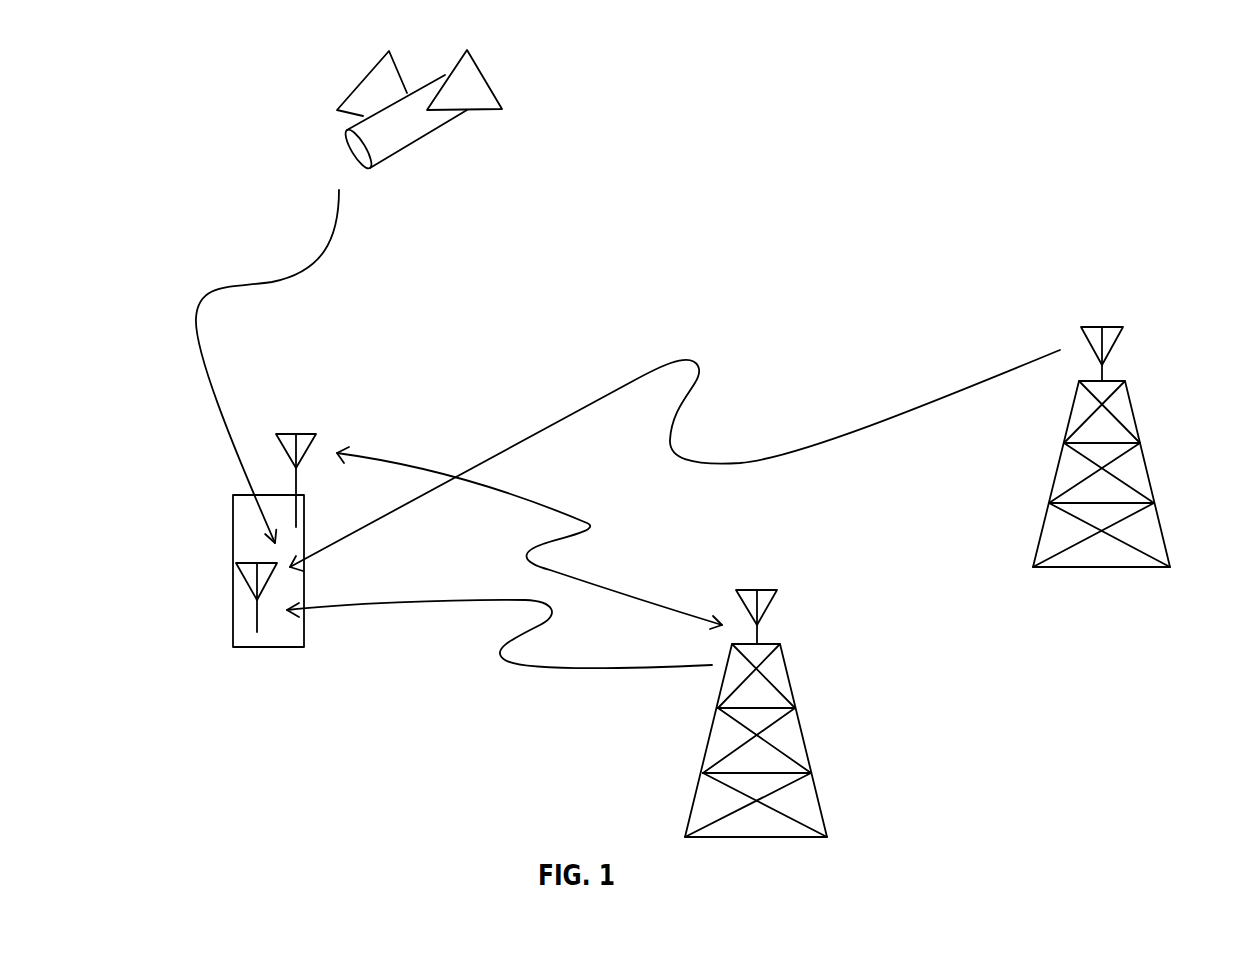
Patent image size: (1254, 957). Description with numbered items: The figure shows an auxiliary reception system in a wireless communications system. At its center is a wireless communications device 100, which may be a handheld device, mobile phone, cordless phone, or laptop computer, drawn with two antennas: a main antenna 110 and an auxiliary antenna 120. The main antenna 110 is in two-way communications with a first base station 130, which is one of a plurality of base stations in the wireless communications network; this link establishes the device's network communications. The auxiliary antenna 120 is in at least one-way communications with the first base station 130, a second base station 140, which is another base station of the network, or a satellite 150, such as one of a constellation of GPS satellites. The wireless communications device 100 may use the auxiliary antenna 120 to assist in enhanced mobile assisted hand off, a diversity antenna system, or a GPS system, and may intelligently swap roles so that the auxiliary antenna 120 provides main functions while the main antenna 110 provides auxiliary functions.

The wireless communications device 100 is at (232, 528).
The main antenna 110 is at (276, 433).
The auxiliary antenna 120 is at (257, 593).
The first base station 130 is at (793, 702).
The second base station 140 is at (1135, 417).
The satellite 150 is at (422, 143).